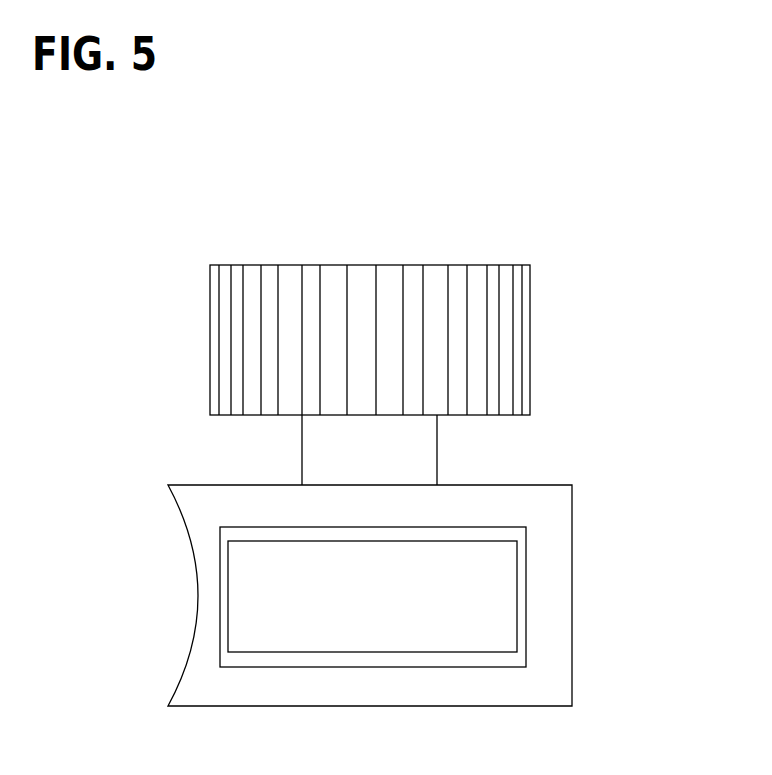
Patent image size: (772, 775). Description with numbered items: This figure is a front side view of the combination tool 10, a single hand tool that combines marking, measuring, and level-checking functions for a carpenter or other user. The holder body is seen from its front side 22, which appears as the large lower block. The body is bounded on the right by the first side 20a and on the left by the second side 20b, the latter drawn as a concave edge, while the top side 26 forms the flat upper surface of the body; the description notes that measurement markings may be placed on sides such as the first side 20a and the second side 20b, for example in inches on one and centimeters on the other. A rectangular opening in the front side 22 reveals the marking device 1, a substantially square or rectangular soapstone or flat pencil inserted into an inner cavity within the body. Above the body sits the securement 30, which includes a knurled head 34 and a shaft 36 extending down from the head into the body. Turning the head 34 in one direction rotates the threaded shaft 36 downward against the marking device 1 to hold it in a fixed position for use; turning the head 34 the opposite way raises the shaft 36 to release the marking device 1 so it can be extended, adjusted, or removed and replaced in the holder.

The combination tool 10 is at (595, 158).
The securement 30 is at (411, 312).
The head 34 is at (528, 343).
The shaft 36 is at (437, 455).
The top side 26 is at (198, 482).
The second side 20b is at (327, 544).
The first side 20a is at (375, 544).
The front side 22 is at (571, 597).
The marking device 1 is at (503, 542).